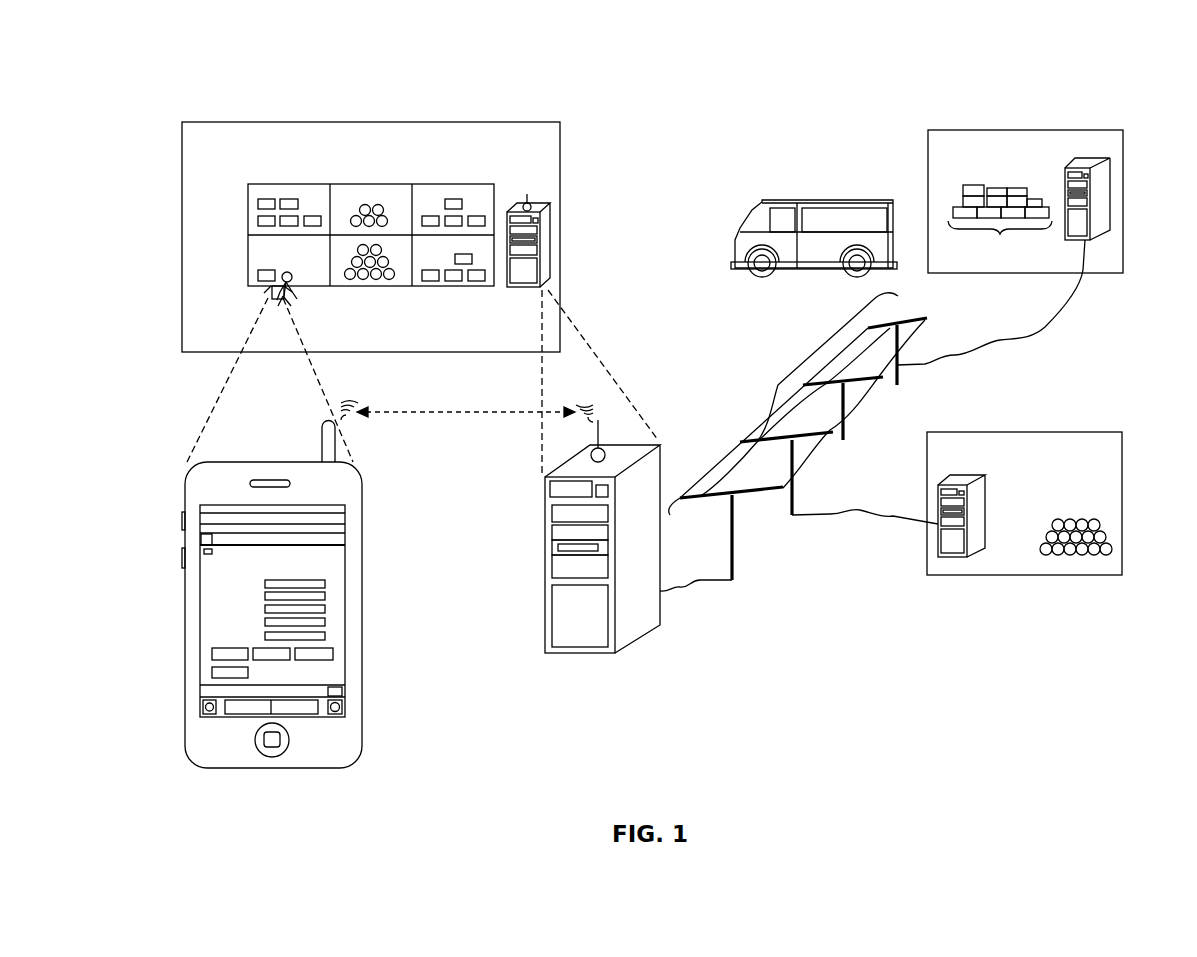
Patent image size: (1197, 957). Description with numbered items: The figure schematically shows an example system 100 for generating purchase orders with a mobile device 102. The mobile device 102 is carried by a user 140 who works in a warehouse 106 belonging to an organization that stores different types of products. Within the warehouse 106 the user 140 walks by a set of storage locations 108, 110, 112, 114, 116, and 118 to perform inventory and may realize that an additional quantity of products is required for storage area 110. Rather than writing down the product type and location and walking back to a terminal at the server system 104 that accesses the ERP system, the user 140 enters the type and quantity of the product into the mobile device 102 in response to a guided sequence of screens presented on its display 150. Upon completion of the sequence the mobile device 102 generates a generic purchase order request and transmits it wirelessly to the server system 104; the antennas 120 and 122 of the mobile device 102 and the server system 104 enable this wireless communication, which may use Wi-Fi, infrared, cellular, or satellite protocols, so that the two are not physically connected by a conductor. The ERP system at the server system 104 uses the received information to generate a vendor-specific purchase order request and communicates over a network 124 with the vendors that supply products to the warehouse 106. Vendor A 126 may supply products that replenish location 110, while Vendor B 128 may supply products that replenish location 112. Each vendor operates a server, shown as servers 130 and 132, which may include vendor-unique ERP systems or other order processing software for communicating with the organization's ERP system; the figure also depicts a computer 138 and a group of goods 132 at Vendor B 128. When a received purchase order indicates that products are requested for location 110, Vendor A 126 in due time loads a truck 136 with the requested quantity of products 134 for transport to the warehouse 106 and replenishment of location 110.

The system 100 is at (186, 76).
The mobile device 102 is at (264, 607).
The server system 104 is at (586, 559).
The warehouse 106 is at (503, 122).
The storage location 108 is at (292, 183).
The storage location 110 is at (262, 290).
The storage location 112 is at (370, 183).
The storage location 114 is at (372, 287).
The storage location 116 is at (443, 183).
The storage location 118 is at (452, 287).
The antenna 120 is at (321, 445).
The antenna 122 is at (607, 435).
The network 124 is at (783, 392).
The Vendor A 126 is at (1053, 188).
The Vendor B 128 is at (994, 511).
The server 130 is at (1112, 195).
The server 132 is at (1084, 556).
The products 134 is at (1000, 225).
The truck 136 is at (835, 200).
The vendor B computer 138 is at (938, 497).
The user 140 is at (296, 294).
The display 150 is at (345, 543).